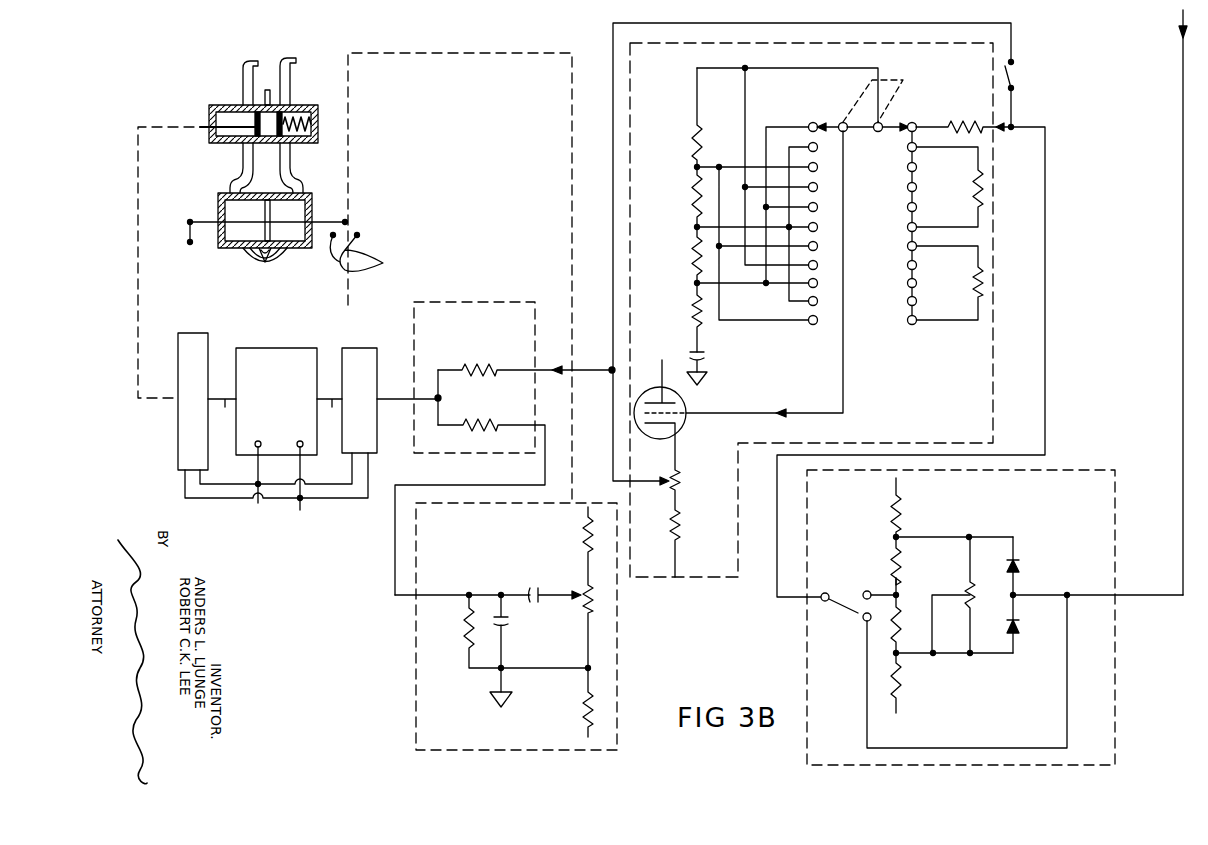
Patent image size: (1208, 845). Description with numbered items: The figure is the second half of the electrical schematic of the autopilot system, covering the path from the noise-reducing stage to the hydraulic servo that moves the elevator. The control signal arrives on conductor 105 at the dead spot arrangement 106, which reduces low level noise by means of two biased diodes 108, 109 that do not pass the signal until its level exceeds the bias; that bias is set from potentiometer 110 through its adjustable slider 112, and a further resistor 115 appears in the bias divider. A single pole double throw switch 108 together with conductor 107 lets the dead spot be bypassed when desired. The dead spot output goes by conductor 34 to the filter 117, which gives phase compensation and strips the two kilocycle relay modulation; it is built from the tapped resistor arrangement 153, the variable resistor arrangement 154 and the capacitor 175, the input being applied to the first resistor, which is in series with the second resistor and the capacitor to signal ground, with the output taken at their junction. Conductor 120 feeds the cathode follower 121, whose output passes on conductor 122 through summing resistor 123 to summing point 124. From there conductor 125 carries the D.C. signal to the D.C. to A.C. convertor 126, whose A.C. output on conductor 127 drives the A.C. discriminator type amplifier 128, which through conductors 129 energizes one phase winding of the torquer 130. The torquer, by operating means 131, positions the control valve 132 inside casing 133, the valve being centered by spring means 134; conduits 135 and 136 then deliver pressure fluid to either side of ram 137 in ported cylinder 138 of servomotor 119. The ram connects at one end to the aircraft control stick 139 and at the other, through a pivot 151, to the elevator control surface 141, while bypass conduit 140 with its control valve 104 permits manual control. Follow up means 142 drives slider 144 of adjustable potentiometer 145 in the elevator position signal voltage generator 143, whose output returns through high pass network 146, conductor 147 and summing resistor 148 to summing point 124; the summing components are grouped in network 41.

The conductor 34 is at (1020, 127).
The gain network 41 is at (507, 302).
The control valve 104 is at (262, 264).
The conductor 105 is at (1183, 248).
The dead spot arrangement 106 is at (1093, 548).
The conductor 107 is at (1067, 675).
The biased diode / single pole double throw switch 108 is at (1019, 630).
The biased diode 109 is at (1016, 566).
The potentiometer 110 is at (960, 591).
The adjustable slider 112 is at (951, 624).
The resistor 115 is at (900, 553).
The filter 117 is at (960, 85).
The hydraulic servomotor 119 is at (192, 153).
The conductor 120 is at (721, 413).
The cathode follower 121 is at (656, 466).
The conductor 122 is at (608, 366).
The summing resistor 123 is at (472, 370).
The summing point 124 is at (456, 397).
The conductor 125 is at (384, 399).
The D.C. to A.C. convertor 126 is at (354, 348).
The conductor 127 is at (334, 411).
The A.C. discriminator type amplifier 128 is at (275, 348).
The conductors 129 is at (225, 411).
The torquer 130 is at (198, 337).
The operating means 131 is at (138, 278).
The control valve 132 is at (255, 136).
The casing 133 is at (232, 105).
The spring means 134 is at (296, 112).
The conduit 135 is at (243, 178).
The conduit 136 is at (284, 157).
The ram 137 is at (264, 234).
The ported cylinder 138 is at (312, 210).
The aircraft control stick 139 is at (193, 206).
The bypass conduit 140 is at (246, 256).
The elevator control surface 141 is at (365, 250).
The follow up means 142 is at (355, 127).
The elevator position signal voltage generator 143 is at (518, 570).
The slider 144 is at (555, 602).
The adjustable potentiometer 145 is at (580, 608).
The high pass network 146 is at (498, 653).
The conductor 147 is at (395, 556).
The summing resistor 148 is at (486, 430).
The pivot 151 is at (333, 240).
The resistor arrangement 153 is at (955, 221).
The variable resistor arrangement 154 is at (793, 120).
The capacitor 175 is at (704, 358).